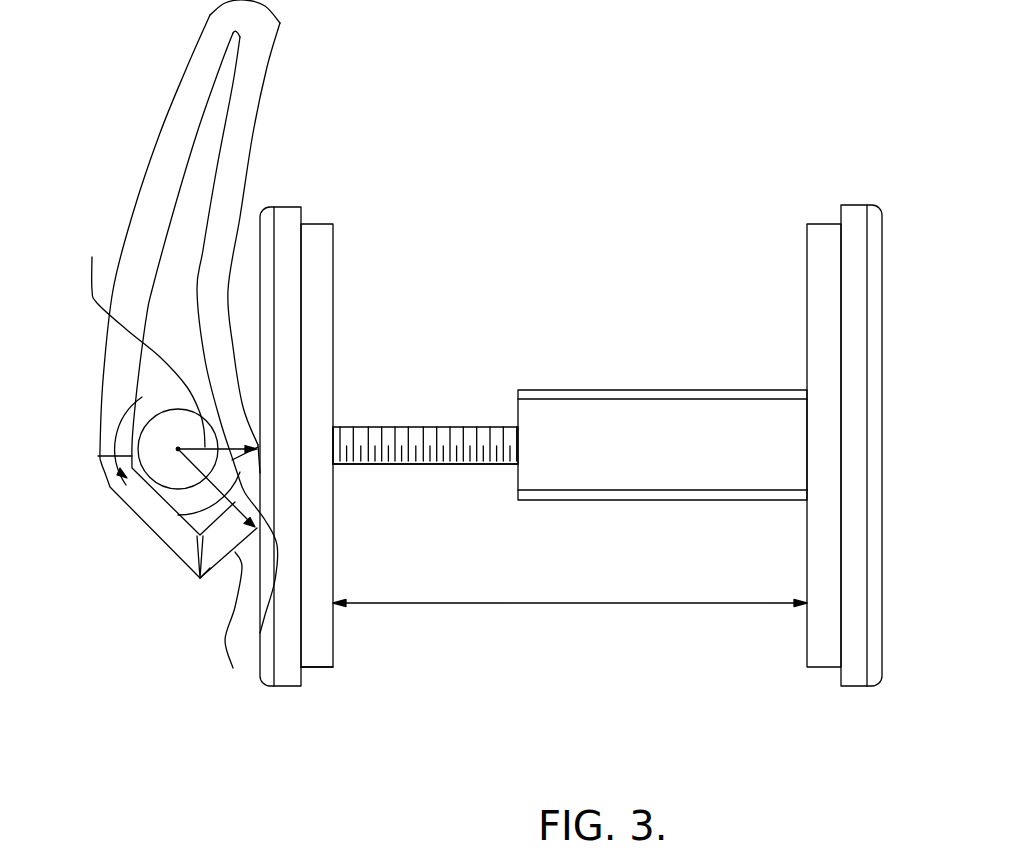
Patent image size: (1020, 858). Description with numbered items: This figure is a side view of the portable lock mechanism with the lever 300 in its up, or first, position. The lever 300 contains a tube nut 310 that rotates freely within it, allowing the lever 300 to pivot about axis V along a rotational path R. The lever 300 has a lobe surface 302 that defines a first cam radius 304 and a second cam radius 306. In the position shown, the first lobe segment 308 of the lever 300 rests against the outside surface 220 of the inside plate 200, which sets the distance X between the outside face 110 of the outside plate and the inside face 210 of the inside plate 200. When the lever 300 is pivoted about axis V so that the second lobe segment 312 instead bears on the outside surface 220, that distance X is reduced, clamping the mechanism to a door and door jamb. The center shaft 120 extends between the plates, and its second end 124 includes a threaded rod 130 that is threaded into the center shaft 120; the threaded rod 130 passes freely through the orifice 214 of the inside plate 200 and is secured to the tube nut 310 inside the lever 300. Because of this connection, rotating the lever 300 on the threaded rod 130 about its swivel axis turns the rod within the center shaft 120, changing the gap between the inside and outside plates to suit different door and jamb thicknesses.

The lever 300 is at (167, 133).
The first cam radius 304 is at (137, 355).
The tube nut 310 is at (163, 472).
The second cam radius 306 is at (178, 515).
The second lobe segment 312 is at (210, 578).
The lobe surface 302 is at (233, 624).
The outside surface 220 is at (258, 238).
The inside plate 200 is at (292, 287).
The first lobe segment 308 is at (260, 473).
The orifice 214 is at (333, 427).
The threaded rod 130 is at (463, 427).
The center shaft 120 is at (617, 415).
The second end 124 is at (344, 477).
The outside face 110 is at (807, 639).
The inside face 210 is at (333, 647).
The axis V is at (178, 448).
The rotational path R is at (117, 428).
The distance X is at (570, 620).